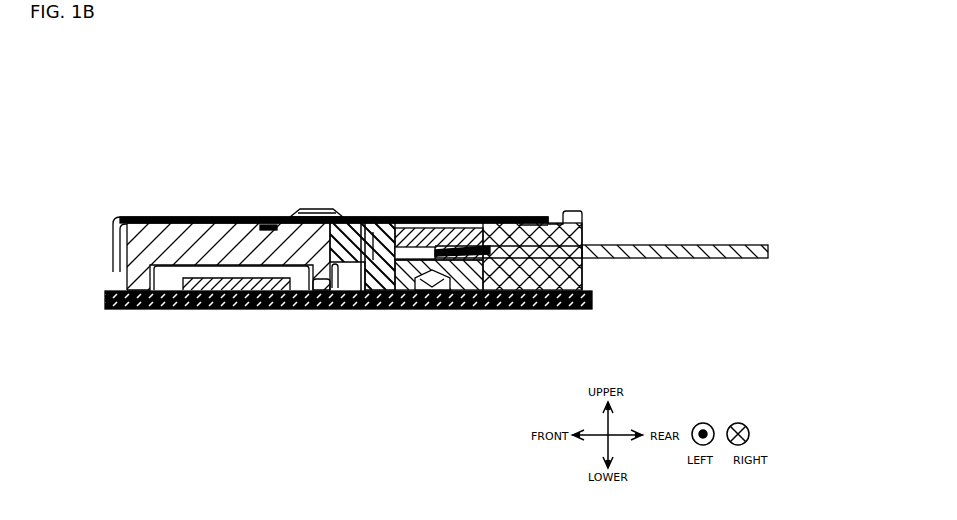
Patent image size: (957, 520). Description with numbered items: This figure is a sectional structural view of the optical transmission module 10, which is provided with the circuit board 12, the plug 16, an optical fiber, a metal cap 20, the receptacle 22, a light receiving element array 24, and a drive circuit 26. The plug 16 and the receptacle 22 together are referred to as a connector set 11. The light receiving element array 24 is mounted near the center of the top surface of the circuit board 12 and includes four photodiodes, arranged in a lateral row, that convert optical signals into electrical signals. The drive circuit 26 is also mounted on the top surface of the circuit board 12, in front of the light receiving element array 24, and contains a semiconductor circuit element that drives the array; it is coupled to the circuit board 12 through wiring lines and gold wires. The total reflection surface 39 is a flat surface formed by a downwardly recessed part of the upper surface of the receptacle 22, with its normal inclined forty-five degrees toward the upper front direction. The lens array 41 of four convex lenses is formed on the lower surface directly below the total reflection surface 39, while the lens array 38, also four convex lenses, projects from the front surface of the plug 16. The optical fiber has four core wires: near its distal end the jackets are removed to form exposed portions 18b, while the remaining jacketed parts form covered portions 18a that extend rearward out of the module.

The optical transmission module 10 is at (112, 147).
The connector set 11 is at (647, 93).
The circuit board 12 is at (405, 309).
The plug 16 is at (492, 309).
The covered portions 18a is at (660, 246).
The exposed portions 18b is at (482, 218).
The metal cap 20 is at (167, 218).
The receptacle 22 is at (214, 218).
The light receiving element array 24 is at (316, 309).
The drive circuit 26 is at (245, 309).
The lens array 38 is at (363, 218).
The total reflection surface 39 is at (312, 222).
The lens array 41 is at (291, 309).